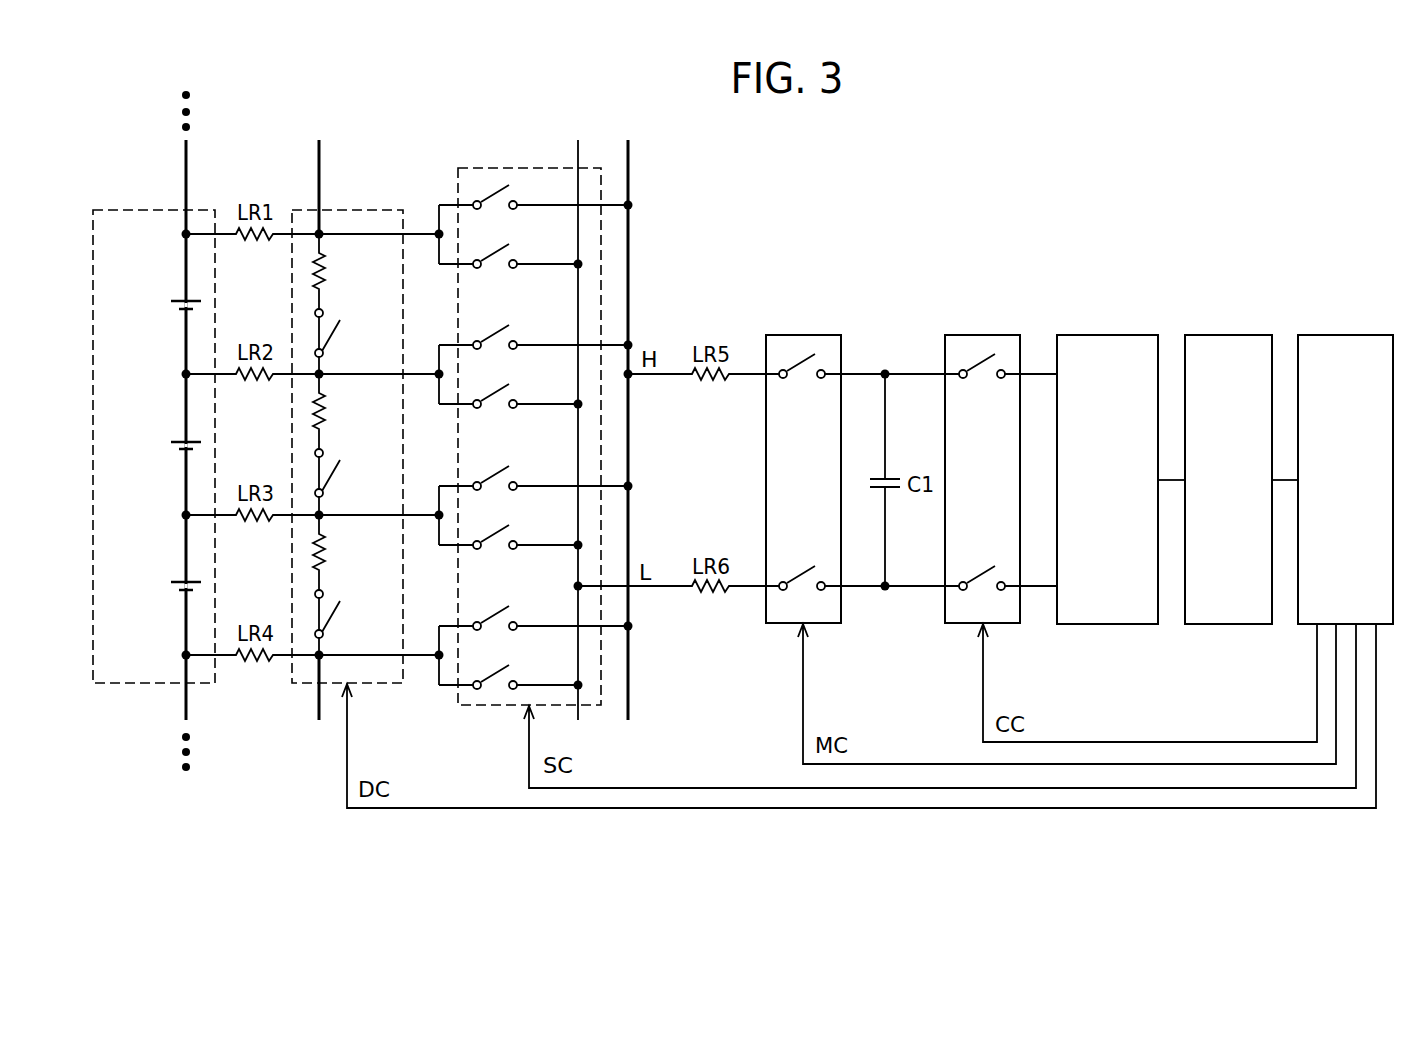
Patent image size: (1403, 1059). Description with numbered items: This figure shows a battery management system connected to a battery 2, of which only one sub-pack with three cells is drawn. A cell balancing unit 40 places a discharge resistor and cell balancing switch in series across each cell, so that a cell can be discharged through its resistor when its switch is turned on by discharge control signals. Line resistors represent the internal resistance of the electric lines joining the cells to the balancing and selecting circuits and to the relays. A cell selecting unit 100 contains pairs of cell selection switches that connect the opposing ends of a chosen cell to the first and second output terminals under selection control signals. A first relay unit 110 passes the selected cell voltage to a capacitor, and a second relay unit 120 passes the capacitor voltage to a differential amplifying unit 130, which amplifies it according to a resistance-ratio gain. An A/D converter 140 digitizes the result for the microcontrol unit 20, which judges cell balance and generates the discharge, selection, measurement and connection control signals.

The battery 2 is at (126, 210).
The cell balancing unit 40 is at (368, 210).
The cell selecting unit 100 is at (522, 168).
The first relay unit 110 is at (818, 335).
The second relay unit 120 is at (995, 335).
The differential amplifying unit 130 is at (1108, 335).
The analog/digital (A/D) converter 140 is at (1241, 335).
The microcontrol unit (MCU) 20 is at (1358, 335).